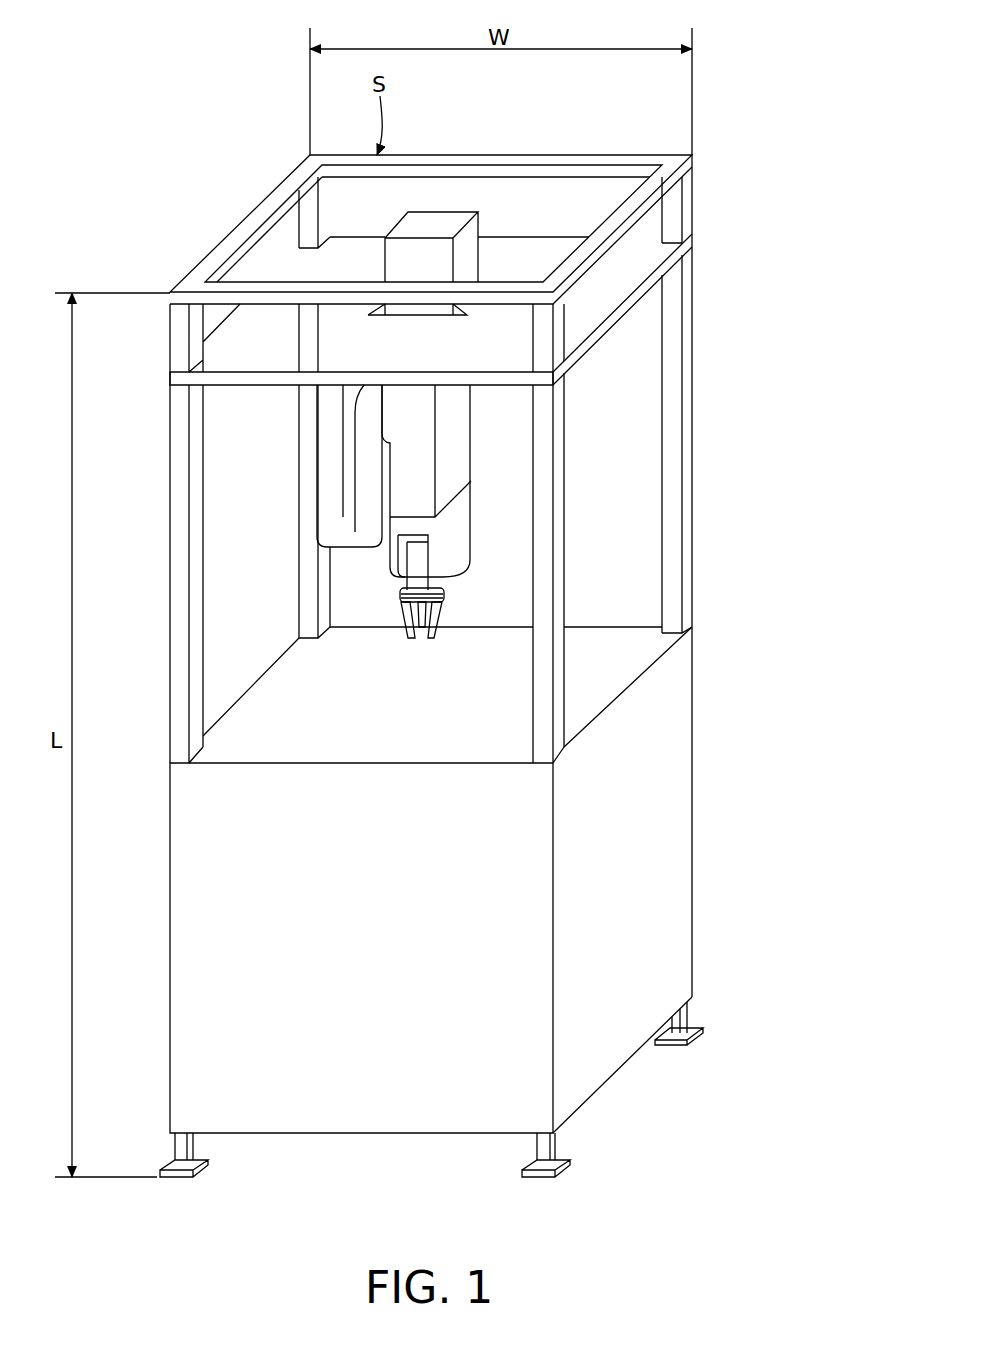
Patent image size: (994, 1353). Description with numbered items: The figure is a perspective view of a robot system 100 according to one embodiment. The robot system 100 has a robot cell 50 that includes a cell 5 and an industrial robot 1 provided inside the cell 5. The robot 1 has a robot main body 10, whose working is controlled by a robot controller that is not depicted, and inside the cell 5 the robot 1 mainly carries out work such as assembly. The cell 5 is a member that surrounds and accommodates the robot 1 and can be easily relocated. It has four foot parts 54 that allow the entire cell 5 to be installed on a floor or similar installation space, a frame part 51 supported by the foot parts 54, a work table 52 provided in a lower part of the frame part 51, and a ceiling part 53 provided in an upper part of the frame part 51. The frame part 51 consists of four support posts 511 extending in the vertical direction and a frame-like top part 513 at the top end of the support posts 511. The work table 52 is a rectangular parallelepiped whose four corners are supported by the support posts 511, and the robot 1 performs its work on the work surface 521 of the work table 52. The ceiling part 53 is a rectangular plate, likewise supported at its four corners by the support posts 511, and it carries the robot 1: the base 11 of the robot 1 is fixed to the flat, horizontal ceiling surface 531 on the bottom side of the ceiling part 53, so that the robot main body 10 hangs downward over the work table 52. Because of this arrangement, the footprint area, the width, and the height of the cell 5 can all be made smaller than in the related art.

The robot system 100 is at (735, 63).
The robot cell 50 is at (737, 142).
The cell 5 is at (695, 203).
The frame part 51 is at (570, 155).
The support post 511 is at (673, 517).
The frame-like top part 513 is at (515, 158).
The ceiling part 53 is at (603, 292).
The ceiling surface 531 is at (253, 386).
The work table 52 is at (665, 820).
The work surface 521 is at (273, 743).
The foot part 54 is at (183, 1143).
The robot 1 is at (490, 452).
The robot main body 10 is at (475, 475).
The base 11 is at (432, 210).